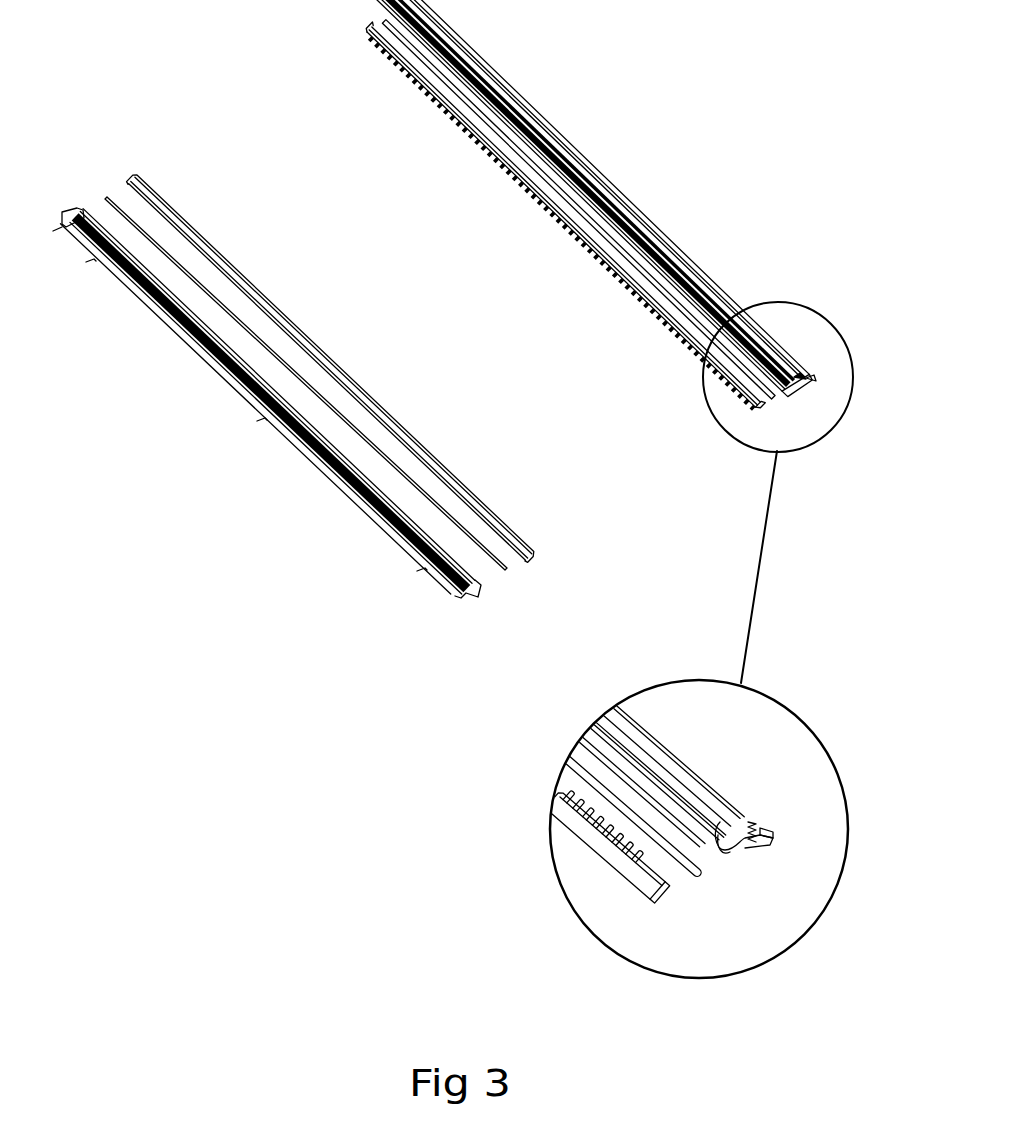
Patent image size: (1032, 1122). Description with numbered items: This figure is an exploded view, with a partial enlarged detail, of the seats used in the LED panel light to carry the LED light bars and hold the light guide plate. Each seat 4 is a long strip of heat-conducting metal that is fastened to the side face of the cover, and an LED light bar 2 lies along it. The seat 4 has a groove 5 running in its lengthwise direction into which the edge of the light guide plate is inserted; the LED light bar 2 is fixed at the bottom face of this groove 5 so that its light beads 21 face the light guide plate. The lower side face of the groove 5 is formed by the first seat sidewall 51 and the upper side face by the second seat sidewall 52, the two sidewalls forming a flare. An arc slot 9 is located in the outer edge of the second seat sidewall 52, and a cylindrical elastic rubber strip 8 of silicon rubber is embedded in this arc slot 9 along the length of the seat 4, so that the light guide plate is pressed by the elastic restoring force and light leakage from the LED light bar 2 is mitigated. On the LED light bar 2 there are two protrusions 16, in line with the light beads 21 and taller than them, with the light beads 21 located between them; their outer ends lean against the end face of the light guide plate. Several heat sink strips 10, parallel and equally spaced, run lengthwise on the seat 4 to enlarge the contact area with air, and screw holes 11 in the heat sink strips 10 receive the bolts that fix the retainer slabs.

The LED light bar 2 is at (675, 332).
The seat 4 is at (367, 487).
The groove 5 is at (800, 373).
The elastic rubber strip 8 is at (317, 385).
The arc slot 9 is at (723, 852).
The heat sink strip 10 is at (813, 377).
The screw hole 11 is at (757, 818).
The protrusion 16 is at (368, 45).
The light bead 21 is at (625, 282).
The first seat sidewall 51 is at (632, 720).
The second seat sidewall 52 is at (615, 743).